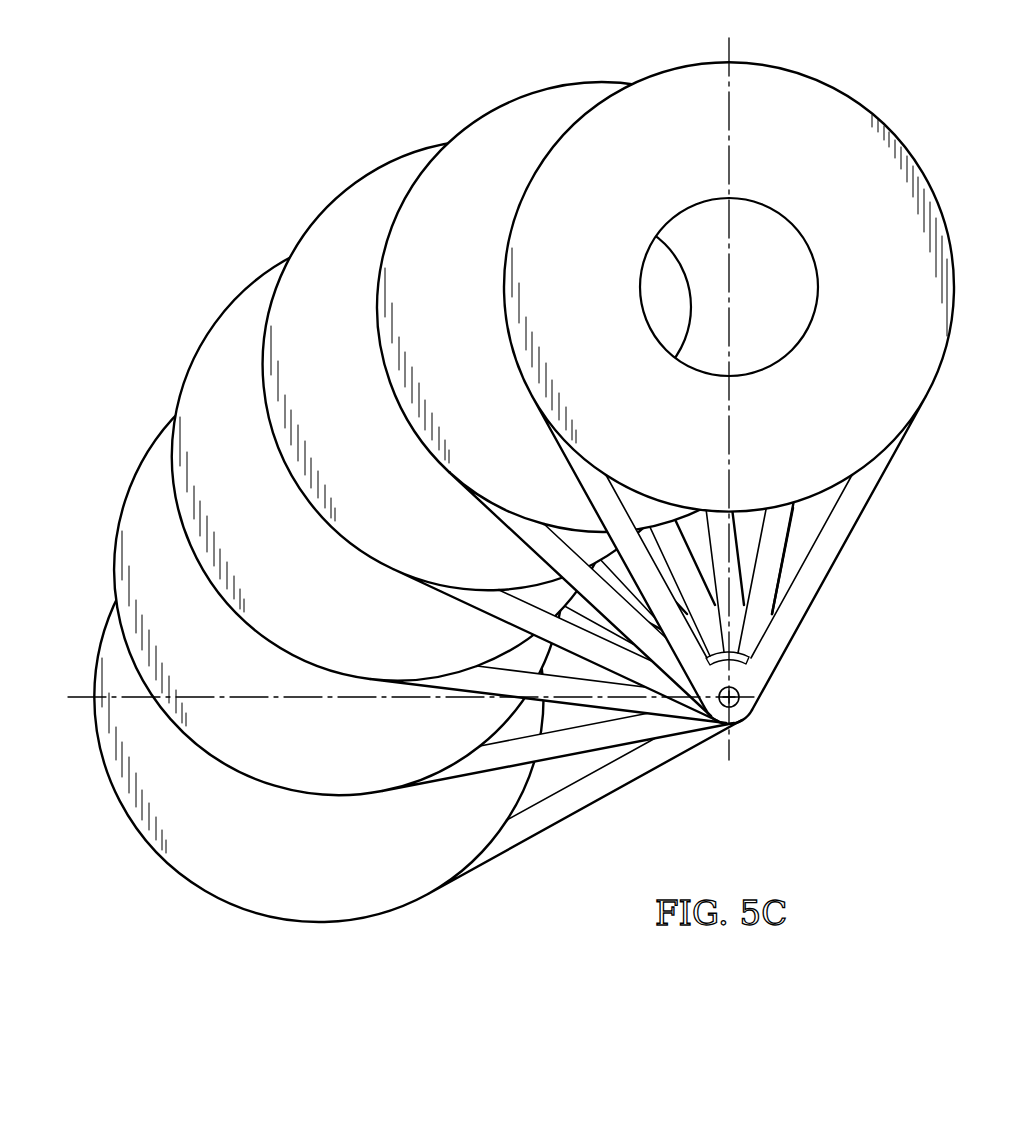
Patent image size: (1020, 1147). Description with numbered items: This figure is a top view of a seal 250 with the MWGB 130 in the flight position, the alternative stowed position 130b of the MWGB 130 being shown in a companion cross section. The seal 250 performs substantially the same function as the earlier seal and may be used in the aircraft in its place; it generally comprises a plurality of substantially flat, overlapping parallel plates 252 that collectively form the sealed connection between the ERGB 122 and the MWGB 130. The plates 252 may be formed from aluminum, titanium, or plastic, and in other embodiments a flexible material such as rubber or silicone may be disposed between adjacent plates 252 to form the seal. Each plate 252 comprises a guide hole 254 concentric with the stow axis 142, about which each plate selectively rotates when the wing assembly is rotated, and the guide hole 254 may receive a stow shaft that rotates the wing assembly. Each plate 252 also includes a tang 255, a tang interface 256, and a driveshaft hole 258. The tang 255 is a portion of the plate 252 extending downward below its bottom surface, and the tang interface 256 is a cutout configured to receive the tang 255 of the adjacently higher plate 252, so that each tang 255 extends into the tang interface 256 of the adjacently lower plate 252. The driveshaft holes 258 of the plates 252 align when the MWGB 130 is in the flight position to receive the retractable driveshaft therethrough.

The seal 250 is at (497, 498).
The MWGB 130 is at (681, 61).
The stowed position 130b is at (825, 106).
The plates 252 is at (472, 122).
The ERGB 122 is at (313, 921).
The driveshaft hole 258 is at (763, 366).
The tang interface 256 is at (797, 548).
The tang 255 is at (748, 667).
The guide hole 254 is at (746, 714).
The stow axis 142 is at (710, 724).